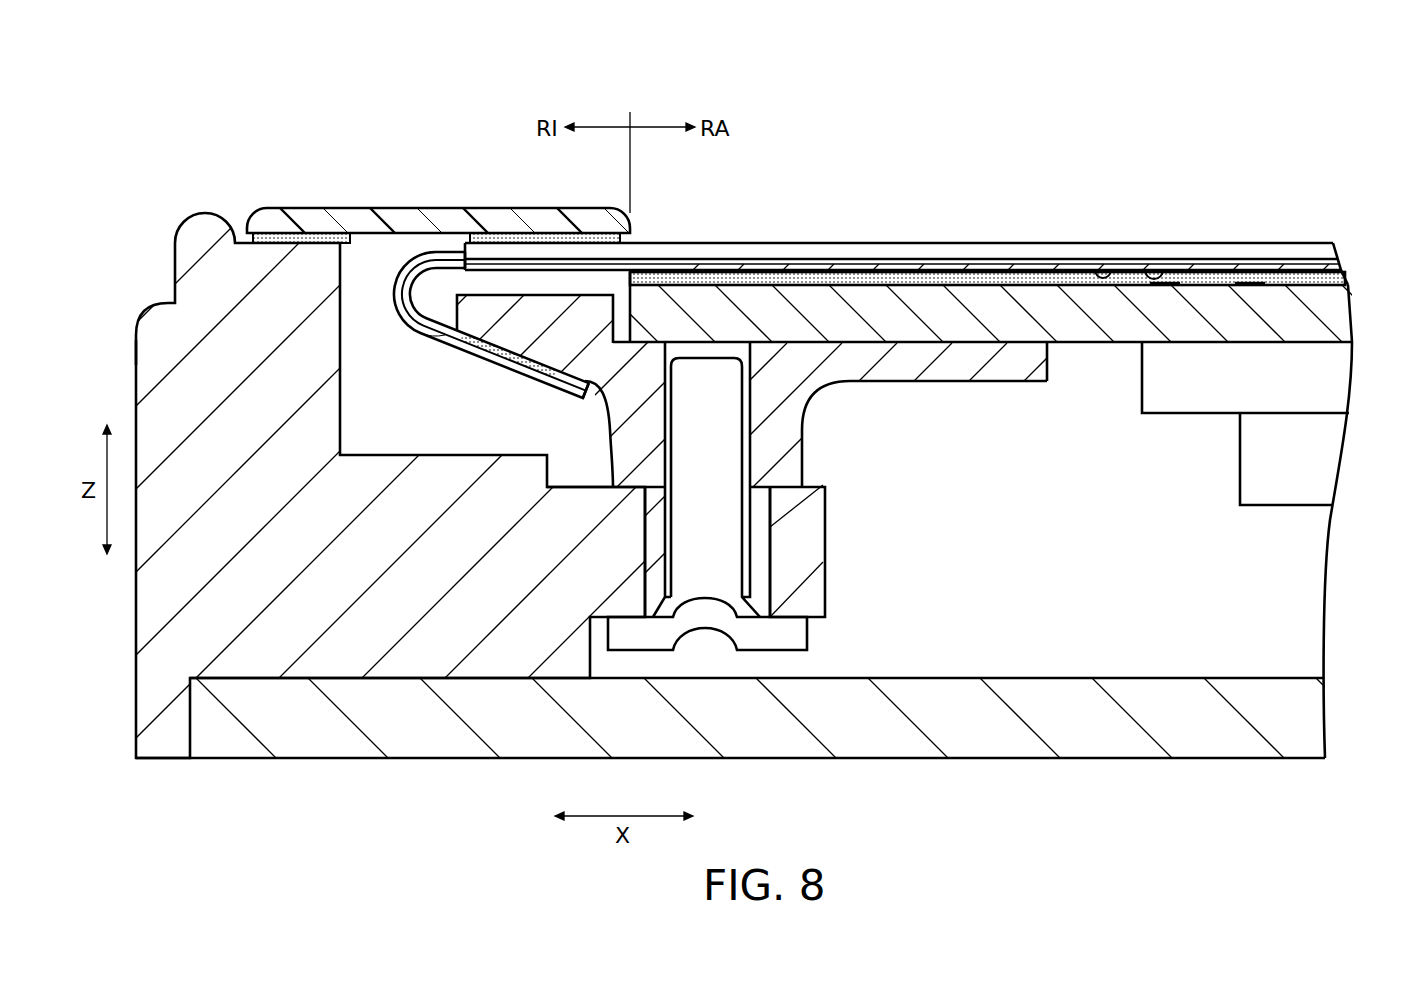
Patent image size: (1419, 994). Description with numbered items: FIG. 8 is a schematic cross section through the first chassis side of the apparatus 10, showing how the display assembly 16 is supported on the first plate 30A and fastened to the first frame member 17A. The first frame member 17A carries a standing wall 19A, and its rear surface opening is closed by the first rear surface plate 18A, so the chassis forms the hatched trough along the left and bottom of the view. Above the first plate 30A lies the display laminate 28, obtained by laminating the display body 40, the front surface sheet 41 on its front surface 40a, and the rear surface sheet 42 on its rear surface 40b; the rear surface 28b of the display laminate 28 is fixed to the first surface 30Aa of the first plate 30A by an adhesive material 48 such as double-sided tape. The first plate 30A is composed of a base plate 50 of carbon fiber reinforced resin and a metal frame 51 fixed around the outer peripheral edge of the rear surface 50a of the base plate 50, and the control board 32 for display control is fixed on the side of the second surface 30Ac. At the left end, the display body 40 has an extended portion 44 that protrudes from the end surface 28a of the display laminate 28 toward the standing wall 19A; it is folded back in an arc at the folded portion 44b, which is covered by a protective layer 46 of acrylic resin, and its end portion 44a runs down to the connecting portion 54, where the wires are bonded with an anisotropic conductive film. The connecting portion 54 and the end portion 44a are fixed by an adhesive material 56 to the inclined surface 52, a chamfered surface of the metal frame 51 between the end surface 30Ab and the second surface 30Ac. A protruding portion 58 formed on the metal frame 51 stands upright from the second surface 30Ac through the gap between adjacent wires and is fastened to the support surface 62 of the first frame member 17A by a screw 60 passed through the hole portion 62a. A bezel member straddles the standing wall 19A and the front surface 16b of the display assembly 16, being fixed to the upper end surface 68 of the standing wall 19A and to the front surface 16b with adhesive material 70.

The electronic device 10 is at (132, 100).
The upper end surface 68 is at (263, 232).
The adhesive material 70 is at (313, 242).
The folded portion 44b is at (390, 290).
The protective layer 46 is at (404, 265).
The end surface 28a is at (463, 250).
The front surface 16b is at (678, 243).
The first surface 30Aa is at (750, 283).
The display laminate 28 is at (903, 207).
The front surface sheet 41 is at (843, 253).
The display body 40 is at (908, 265).
The rear surface sheet 42 is at (822, 182).
The front surface 40a is at (1067, 270).
The rear surface 40b is at (1113, 272).
The rear surface 28b is at (1161, 283).
The display assembly 16 is at (1214, 197).
The adhesive material 48 is at (1248, 283).
The first frame member 17A is at (128, 352).
The standing wall 19A is at (178, 388).
The end surface 30Ab is at (430, 341).
The extended portion 44 is at (467, 302).
The adhesive material 56 is at (478, 366).
The connecting portion 54 is at (508, 369).
The end portion 44a is at (542, 386).
The inclined surface 52 is at (576, 400).
The second surface 30Ac is at (912, 382).
The metal frame 51 is at (1014, 374).
The base plate 50 is at (1090, 332).
The first plate 30A is at (1000, 376).
The protruding portion 58 is at (790, 457).
The support surface 62 is at (802, 474).
The hole portion 62a is at (770, 562).
The screw 60 is at (790, 635).
The rear surface 50a is at (1201, 345).
The control board 32 is at (1330, 392).
The first rear surface plate 18A is at (343, 740).